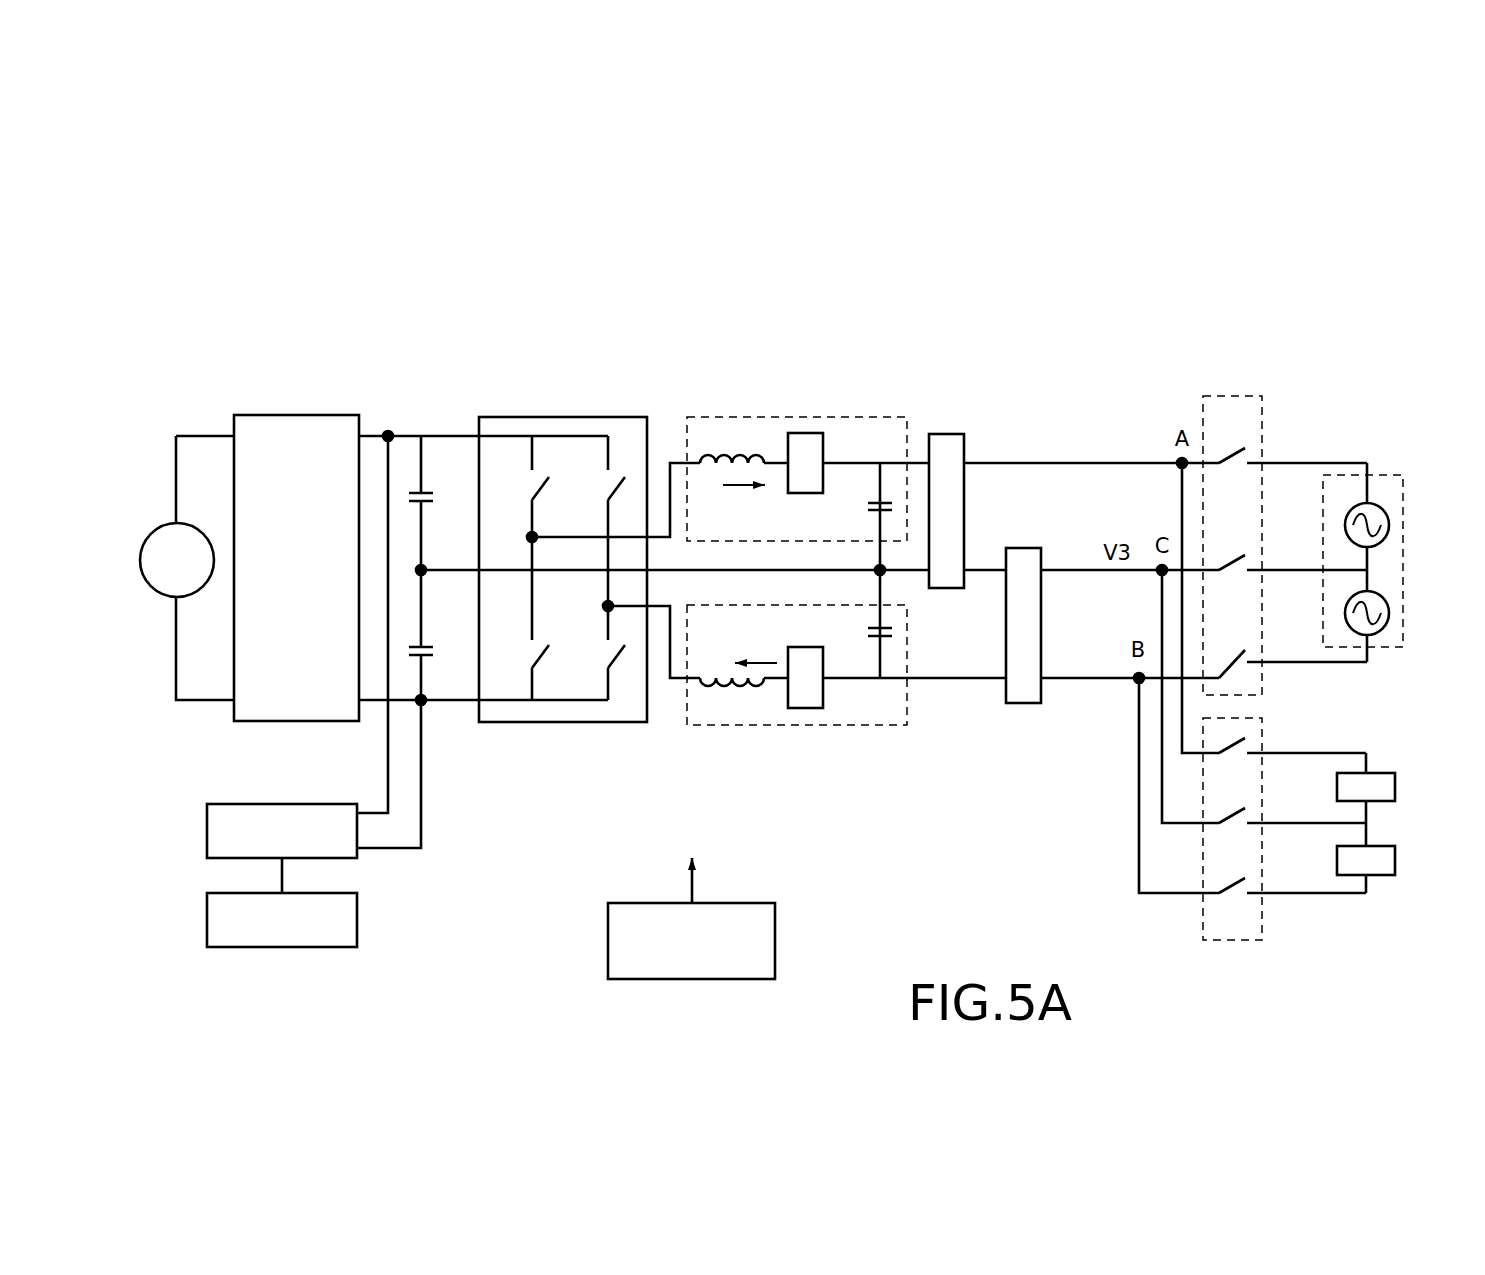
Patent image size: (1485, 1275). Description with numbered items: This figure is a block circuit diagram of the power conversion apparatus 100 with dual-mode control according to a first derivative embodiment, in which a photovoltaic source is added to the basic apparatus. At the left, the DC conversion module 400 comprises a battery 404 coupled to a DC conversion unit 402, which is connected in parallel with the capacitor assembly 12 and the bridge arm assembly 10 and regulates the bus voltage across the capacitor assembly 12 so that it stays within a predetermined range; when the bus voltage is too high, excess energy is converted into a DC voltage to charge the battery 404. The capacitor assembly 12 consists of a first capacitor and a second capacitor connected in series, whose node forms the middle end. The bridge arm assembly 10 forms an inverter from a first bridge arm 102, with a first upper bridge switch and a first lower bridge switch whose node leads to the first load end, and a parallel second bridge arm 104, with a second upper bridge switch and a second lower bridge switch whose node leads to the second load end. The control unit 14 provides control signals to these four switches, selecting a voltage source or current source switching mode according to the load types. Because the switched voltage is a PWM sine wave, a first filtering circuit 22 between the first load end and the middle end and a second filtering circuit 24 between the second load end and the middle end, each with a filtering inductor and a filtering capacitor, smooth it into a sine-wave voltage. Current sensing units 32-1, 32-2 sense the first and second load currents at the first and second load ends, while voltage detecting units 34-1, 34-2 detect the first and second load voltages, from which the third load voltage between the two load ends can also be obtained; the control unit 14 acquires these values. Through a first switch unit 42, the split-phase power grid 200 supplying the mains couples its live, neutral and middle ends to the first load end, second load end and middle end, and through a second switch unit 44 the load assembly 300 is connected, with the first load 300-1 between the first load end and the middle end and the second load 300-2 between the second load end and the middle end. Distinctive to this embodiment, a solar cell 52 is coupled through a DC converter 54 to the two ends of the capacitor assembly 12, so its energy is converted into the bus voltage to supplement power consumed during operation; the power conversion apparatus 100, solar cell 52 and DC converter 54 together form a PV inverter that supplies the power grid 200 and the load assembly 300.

The DC conversion module 400 is at (239, 474).
The battery 404 is at (158, 523).
The DC conversion unit 402 is at (303, 440).
The capacitor assembly 12 is at (412, 470).
The bridge arm assembly 10 is at (675, 531).
The first bridge arm 102 is at (513, 458).
The second bridge arm 104 is at (597, 465).
The power conversion apparatus 100 is at (713, 521).
The first filtering circuit 22 is at (808, 449).
The second filtering circuit 24 is at (846, 693).
The current sensing unit 32-1 is at (802, 443).
The current sensing unit 32-2 is at (803, 708).
The voltage detecting unit 34-1 is at (947, 447).
The voltage detecting unit 34-2 is at (1025, 703).
The first switch unit 42 is at (1225, 400).
The second switch unit 44 is at (1233, 930).
The power grid 200 is at (1393, 432).
The load assembly 300 is at (1340, 867).
The first load 300-1 is at (1338, 785).
The second load 300-2 is at (1347, 863).
The control unit 14 is at (758, 940).
The DC converter 54 is at (277, 813).
The solar cell 52 is at (307, 938).